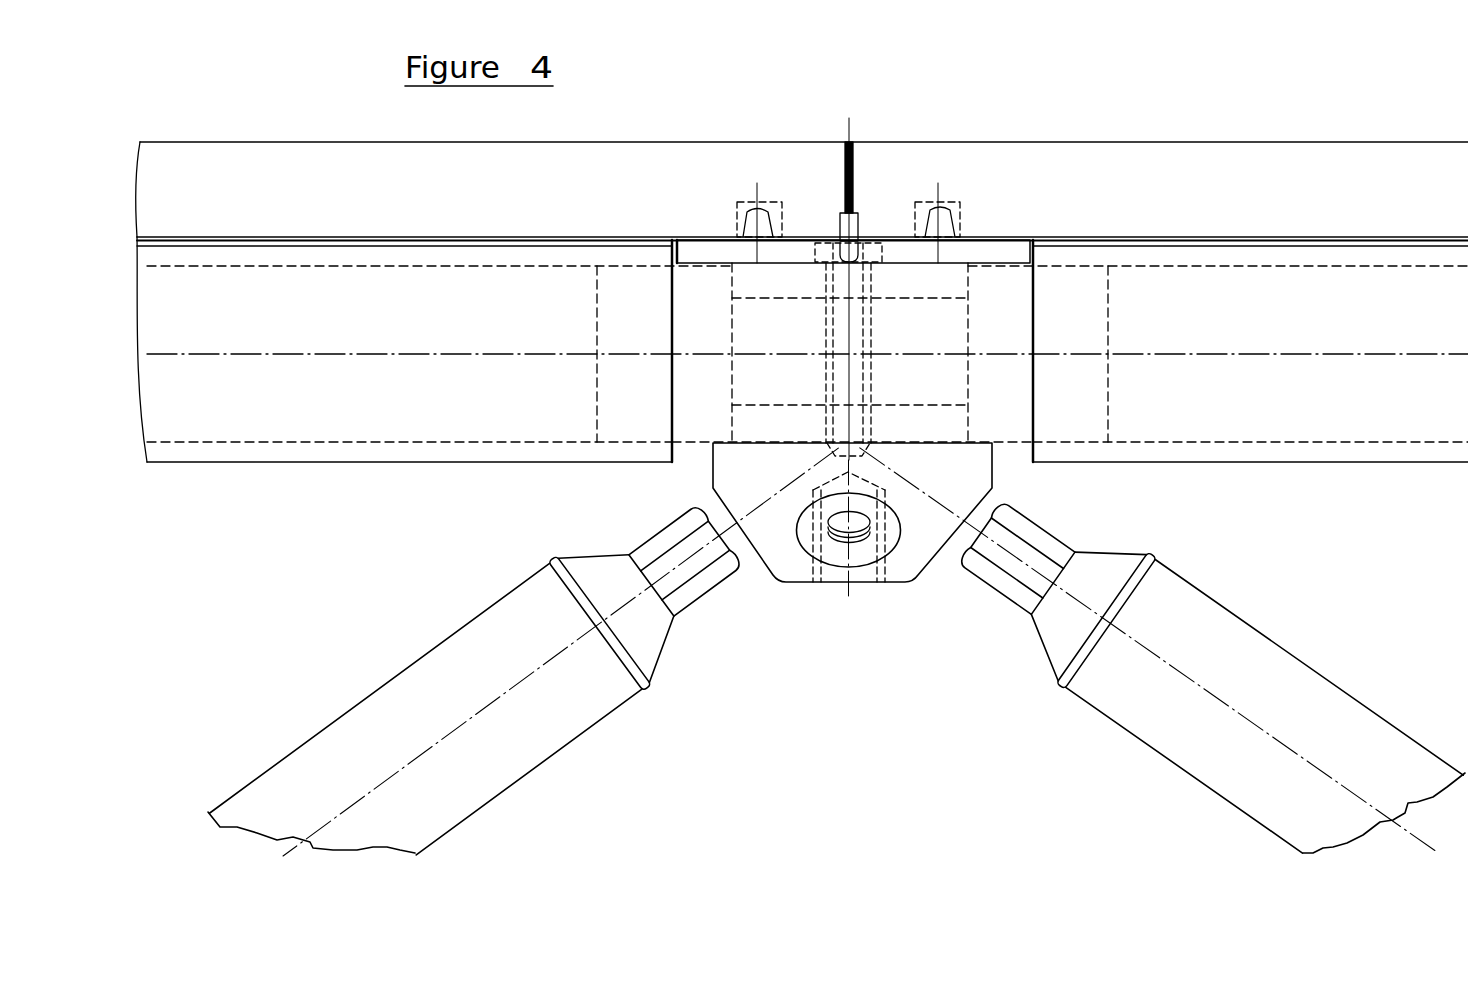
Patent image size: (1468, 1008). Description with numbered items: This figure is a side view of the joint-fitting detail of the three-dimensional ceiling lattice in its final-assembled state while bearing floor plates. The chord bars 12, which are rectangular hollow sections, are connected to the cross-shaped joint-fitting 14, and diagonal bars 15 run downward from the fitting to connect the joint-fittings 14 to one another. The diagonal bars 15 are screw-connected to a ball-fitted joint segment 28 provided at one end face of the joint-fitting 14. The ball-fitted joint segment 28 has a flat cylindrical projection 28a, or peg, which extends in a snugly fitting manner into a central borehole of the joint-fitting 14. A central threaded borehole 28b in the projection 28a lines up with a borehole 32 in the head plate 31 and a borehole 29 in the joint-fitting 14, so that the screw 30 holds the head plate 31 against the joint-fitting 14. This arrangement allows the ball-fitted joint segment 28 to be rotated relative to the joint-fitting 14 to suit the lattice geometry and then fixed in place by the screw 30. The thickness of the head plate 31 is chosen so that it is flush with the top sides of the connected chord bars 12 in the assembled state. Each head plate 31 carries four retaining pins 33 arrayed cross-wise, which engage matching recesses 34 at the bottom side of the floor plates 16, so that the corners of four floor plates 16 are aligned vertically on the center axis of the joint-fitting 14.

The bars of the upper chord 12 is at (475, 447).
The joint-fitting 14 is at (1000, 448).
The diagonal bars 15 is at (1113, 687).
The floor plates 16 is at (410, 168).
The ball-fitted joint segment 28 is at (790, 558).
The flat cylindrical projection 28a is at (925, 419).
The central threaded borehole 28b is at (830, 422).
The borehole in the joint-fitting 29 is at (872, 370).
The screw 30 is at (873, 320).
The head plate 31 is at (1002, 248).
The borehole in the head plate 32 is at (882, 252).
The retaining pins 33 is at (750, 219).
The recesses 34 is at (778, 197).